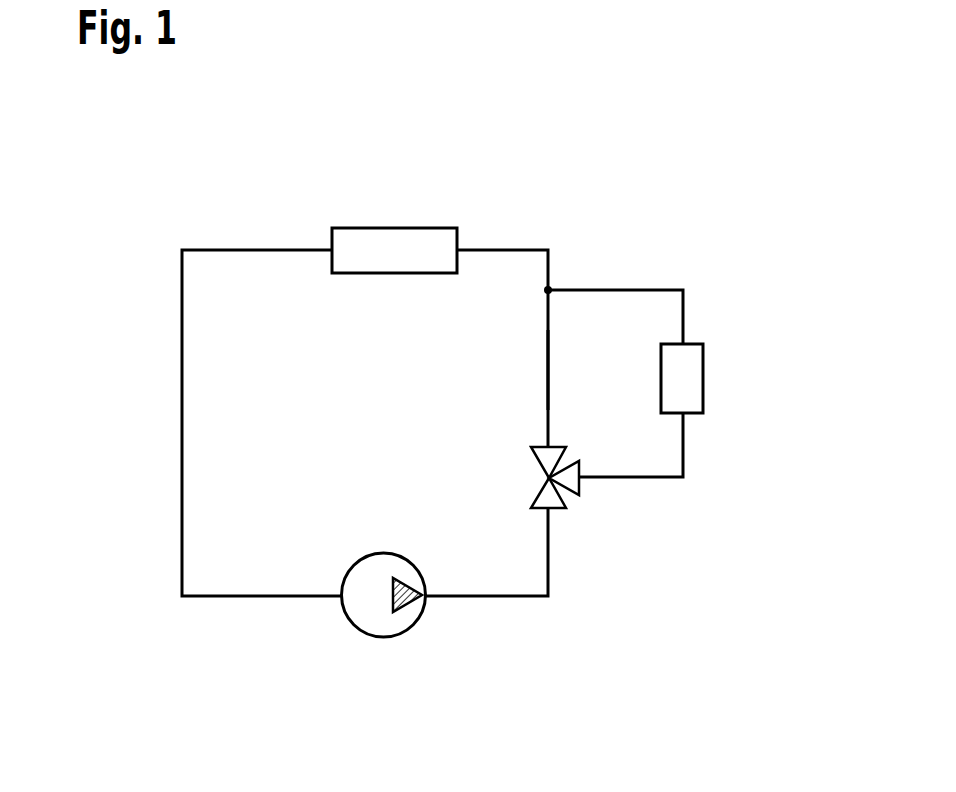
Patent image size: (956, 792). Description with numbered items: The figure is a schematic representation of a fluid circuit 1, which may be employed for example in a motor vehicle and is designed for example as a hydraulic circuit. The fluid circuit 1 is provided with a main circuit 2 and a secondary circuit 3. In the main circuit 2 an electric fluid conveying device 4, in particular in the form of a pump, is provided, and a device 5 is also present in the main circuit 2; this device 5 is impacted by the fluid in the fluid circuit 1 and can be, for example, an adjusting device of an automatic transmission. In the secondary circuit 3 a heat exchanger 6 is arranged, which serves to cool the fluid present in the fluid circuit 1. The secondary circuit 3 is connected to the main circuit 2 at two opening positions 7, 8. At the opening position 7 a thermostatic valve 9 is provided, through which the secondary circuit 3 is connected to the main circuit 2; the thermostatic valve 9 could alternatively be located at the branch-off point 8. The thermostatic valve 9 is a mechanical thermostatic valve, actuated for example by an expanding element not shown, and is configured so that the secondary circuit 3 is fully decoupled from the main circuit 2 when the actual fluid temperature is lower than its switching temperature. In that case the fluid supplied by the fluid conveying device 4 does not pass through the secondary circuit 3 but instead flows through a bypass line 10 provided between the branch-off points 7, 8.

The fluid circuit 1 is at (690, 181).
The main circuit 2 is at (253, 221).
The secondary circuit 3 is at (702, 313).
The fluid conveying device 4 is at (383, 620).
The device 5 is at (396, 245).
The heat exchanger 6 is at (688, 383).
The opening position 7 is at (581, 481).
The opening position 8 is at (549, 290).
The thermostatic valve 9 is at (545, 508).
The bypass line 10 is at (548, 368).